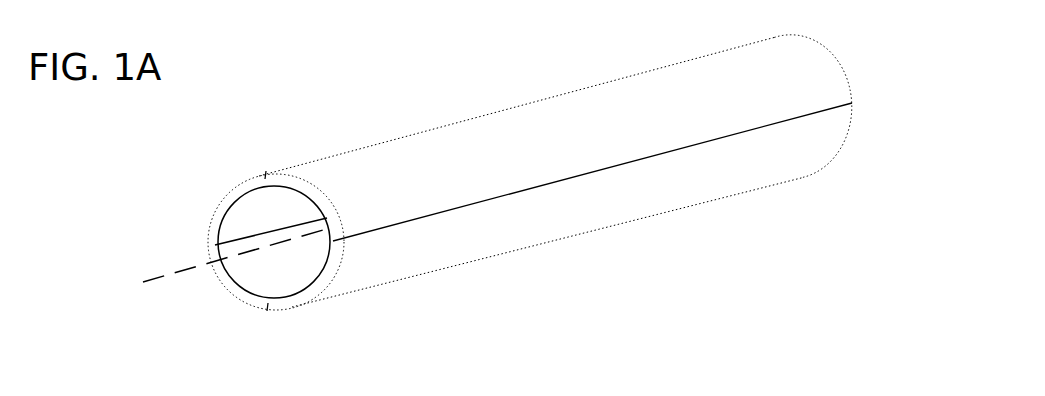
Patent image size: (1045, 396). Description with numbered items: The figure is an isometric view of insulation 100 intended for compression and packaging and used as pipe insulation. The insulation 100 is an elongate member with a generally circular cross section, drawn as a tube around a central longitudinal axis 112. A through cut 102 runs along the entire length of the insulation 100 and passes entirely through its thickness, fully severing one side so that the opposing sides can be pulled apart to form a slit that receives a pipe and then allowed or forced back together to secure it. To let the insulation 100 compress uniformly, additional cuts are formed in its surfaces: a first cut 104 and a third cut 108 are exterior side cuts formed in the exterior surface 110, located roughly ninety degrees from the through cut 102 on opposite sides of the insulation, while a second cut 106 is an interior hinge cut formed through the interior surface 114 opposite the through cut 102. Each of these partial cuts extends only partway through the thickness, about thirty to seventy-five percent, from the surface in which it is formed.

The insulation 100 is at (508, 198).
The through cut 102 is at (827, 110).
The first cut 104 is at (262, 317).
The second cut 106 is at (207, 247).
The third cut 108 is at (263, 171).
The exterior surface 110 is at (735, 177).
The central longitudinal axis 112 is at (157, 278).
The interior surface 114 is at (250, 210).